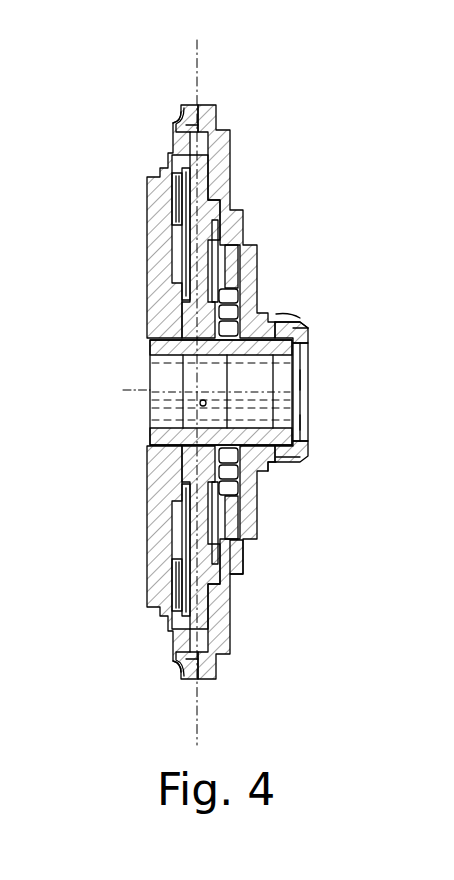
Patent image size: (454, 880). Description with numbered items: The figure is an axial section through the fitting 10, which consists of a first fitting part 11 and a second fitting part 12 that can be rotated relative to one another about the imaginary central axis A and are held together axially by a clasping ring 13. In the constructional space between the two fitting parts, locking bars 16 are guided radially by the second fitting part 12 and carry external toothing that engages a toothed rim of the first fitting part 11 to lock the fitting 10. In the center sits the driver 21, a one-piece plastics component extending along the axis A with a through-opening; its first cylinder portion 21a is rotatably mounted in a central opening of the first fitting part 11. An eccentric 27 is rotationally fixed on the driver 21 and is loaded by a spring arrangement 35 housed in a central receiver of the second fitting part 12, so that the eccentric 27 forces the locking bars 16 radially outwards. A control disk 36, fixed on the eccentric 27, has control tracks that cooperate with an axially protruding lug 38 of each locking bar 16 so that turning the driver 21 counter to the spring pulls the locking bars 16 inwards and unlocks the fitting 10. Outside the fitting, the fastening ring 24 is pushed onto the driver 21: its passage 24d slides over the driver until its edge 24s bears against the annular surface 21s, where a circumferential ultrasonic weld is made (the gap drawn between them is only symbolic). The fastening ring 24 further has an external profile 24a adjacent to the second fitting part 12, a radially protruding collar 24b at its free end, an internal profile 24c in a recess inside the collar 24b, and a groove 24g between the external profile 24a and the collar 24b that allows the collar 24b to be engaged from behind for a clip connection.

The fitting 10 is at (308, 652).
The first fitting part 11 is at (148, 187).
The second fitting part 12 is at (233, 177).
The clasping ring 13 is at (177, 140).
The locking bar 16 is at (210, 245).
The driver 21 is at (235, 384).
The first cylinder portion 21a is at (170, 415).
The annular surface 21s is at (303, 317).
The fastening ring 24 is at (340, 416).
The external profile 24a is at (280, 315).
The collar 24b is at (295, 328).
The internal profile 24c is at (300, 378).
The passage 24d is at (300, 425).
The edge 24s is at (300, 457).
The groove 24g is at (277, 457).
The eccentric 27 is at (240, 540).
The spring arrangement 35 is at (240, 300).
The control disk 36 is at (197, 262).
The lug 38 is at (177, 213).
The central axis A is at (168, 392).